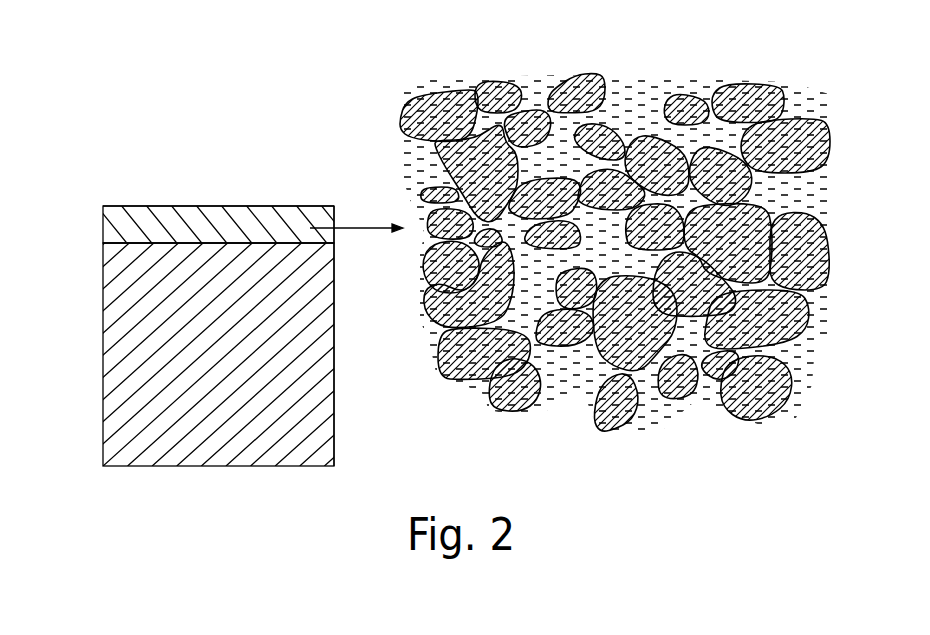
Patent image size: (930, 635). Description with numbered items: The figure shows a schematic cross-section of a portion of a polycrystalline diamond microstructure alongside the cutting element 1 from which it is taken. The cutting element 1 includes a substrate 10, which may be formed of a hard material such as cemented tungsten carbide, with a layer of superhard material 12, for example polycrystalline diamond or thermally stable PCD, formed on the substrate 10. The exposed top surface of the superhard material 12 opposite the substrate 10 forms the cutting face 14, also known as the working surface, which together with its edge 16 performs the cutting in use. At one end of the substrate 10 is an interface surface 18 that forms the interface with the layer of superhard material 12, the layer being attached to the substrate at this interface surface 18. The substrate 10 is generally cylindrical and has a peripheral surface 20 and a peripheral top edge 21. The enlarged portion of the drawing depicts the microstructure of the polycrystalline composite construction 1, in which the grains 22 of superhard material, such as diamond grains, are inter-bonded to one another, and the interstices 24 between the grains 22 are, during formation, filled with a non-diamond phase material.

The cutting element 1 is at (110, 162).
The substrate 10 is at (102, 352).
The layer of superhard material 12 is at (103, 225).
The cutting face 14 is at (252, 205).
The edge 16 is at (336, 206).
The interface surface 18 is at (152, 238).
The peripheral surface 20 is at (335, 330).
The peripheral top edge 21 is at (315, 243).
The grains 22 is at (647, 113).
The interstices 24 is at (565, 153).